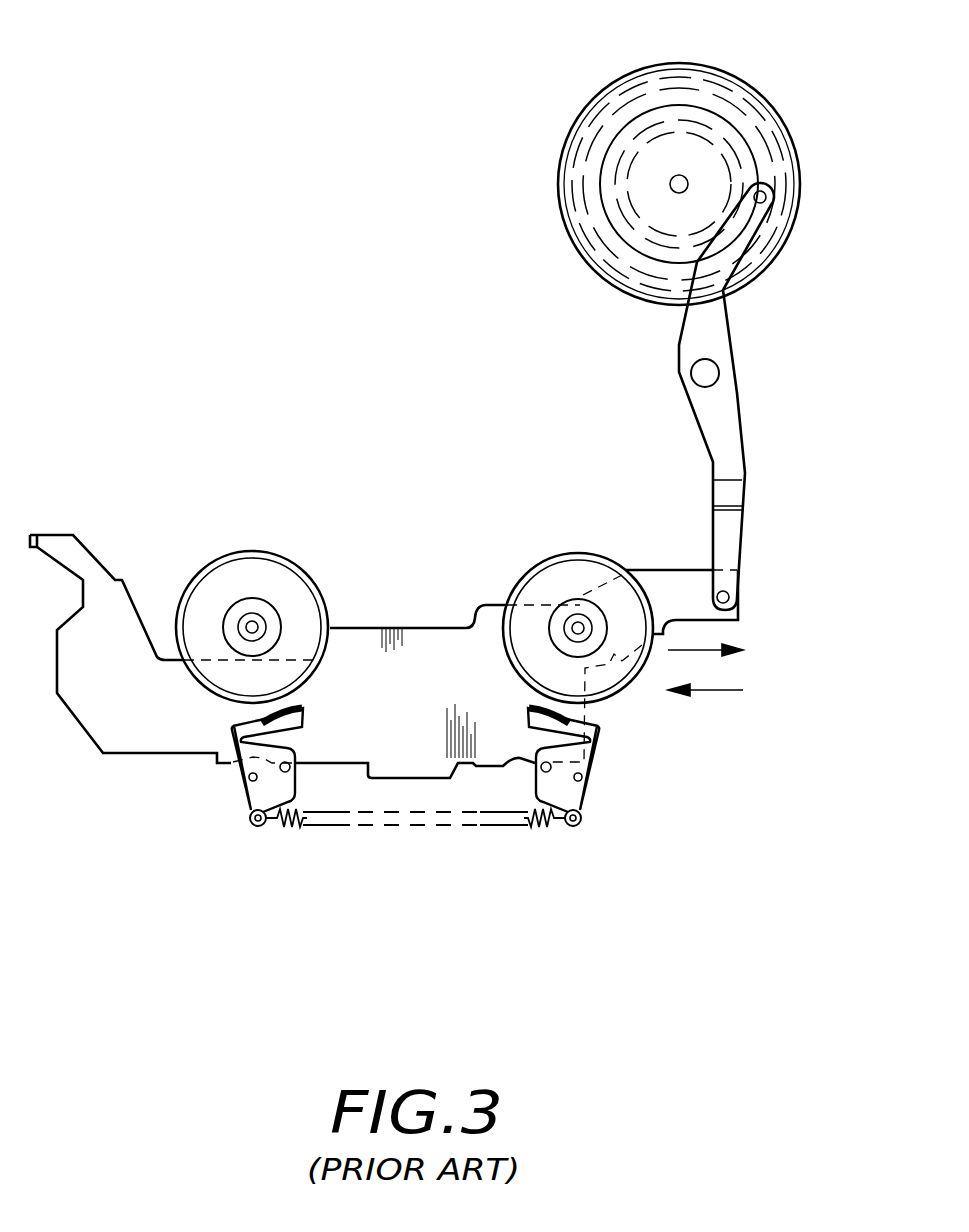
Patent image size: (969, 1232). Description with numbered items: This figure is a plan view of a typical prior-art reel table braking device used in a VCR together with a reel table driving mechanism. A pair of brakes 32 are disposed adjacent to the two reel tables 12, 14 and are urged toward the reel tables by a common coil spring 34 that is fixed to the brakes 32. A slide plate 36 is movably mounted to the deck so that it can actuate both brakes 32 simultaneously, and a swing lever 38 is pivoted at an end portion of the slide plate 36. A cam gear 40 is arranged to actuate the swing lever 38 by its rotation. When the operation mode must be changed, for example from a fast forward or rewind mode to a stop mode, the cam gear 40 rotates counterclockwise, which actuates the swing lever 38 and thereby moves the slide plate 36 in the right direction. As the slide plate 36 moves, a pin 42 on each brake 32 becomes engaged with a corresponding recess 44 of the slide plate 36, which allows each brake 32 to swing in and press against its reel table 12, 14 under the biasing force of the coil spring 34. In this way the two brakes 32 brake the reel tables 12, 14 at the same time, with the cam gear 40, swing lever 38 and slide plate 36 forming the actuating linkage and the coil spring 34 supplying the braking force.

The reel table 12 is at (240, 552).
The reel table 14 is at (548, 560).
The brake 32 is at (250, 807).
The coil spring 34 is at (326, 822).
The slide plate 36 is at (437, 628).
The swing lever 38 is at (745, 470).
The cam gear 40 is at (772, 262).
The pin 42 is at (273, 826).
The recess 44 is at (250, 780).